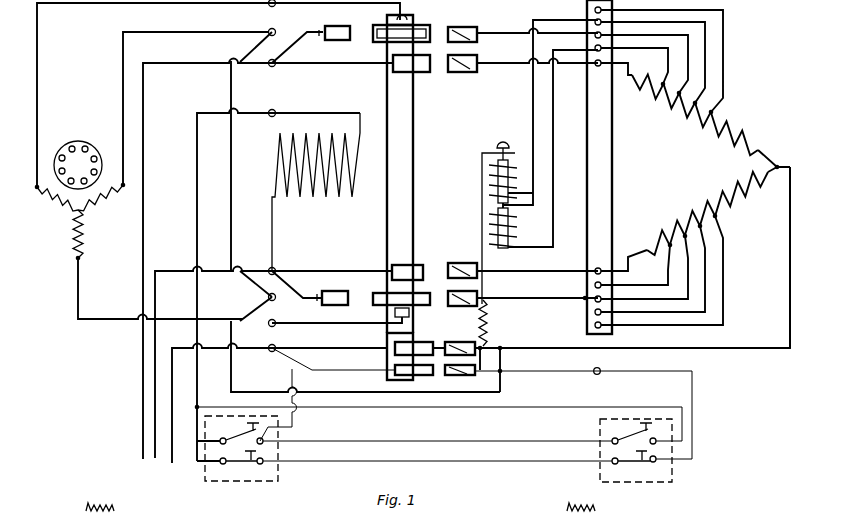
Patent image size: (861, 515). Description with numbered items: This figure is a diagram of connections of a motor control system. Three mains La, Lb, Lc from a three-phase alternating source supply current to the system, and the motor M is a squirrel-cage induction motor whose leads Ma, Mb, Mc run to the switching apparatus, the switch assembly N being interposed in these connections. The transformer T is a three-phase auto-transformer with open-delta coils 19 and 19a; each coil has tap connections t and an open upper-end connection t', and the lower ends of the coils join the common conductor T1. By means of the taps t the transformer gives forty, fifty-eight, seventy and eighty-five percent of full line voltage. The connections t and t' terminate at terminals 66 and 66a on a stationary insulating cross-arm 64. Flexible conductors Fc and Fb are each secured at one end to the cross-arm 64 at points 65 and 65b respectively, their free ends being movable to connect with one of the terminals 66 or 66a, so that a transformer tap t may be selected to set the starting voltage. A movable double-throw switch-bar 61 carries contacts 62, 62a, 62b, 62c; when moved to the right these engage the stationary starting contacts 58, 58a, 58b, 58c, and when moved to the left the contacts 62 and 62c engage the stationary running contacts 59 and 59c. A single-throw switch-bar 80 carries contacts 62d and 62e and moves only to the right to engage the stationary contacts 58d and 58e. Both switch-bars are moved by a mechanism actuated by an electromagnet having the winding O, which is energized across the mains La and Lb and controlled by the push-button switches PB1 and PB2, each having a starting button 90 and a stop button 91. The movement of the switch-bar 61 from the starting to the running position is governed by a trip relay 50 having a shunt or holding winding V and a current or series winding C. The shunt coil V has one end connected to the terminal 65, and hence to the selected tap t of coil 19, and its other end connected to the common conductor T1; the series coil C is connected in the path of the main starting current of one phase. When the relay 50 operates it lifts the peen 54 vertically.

The motor lead Mc is at (62, 92).
The motor armature lead Ma is at (123, 98).
The squirrel-cage induction motor M is at (79, 142).
The motor return lead Mb is at (80, 298).
The reversing switch N is at (198, 170).
The main Lc is at (143, 459).
The main Lb is at (155, 458).
The main La is at (172, 462).
The stationary running contact 59 is at (337, 42).
The stationary running contact 59c is at (334, 290).
The electromagnet winding O is at (331, 198).
The double-throw switch-bar 61 is at (400, 174).
The movable contact 62 is at (430, 32).
The movable contact 62a is at (425, 68).
The movable contact 62b is at (418, 264).
The movable contact 62c is at (425, 292).
The movable contact 62d is at (432, 332).
The movable contact 62e is at (432, 380).
The single-throw switch-bar 80 is at (387, 378).
The stationary starting contact 58 is at (470, 36).
The stationary starting contact 58a is at (468, 67).
The stationary starting contact 58b is at (470, 267).
The stationary starting contact 58c is at (470, 295).
The stationary contact 58d is at (462, 339).
The stationary contact 58e is at (462, 376).
The peen 54 is at (505, 141).
The shunt or holding winding V is at (490, 175).
The trip relay 50 is at (490, 202).
The current or series winding C is at (490, 229).
The stationary insulating cross-arm 64 is at (599, 167).
The flexible conductor anchor point 65 is at (587, 18).
The flexible conductor Fc is at (587, 5).
The flexible conductor anchor point 65b is at (587, 297).
The flexible conductor Fb is at (590, 314).
The terminal 66 is at (650, 48).
The terminal 66a is at (615, 326).
The tap connection t is at (715, 162).
The open or upper-end connection t' is at (632, 159).
The open-delta coil 19 is at (738, 132).
The open-delta coil 19a is at (733, 210).
The transformer T is at (735, 162).
The common conductor T1 is at (791, 262).
The push-button switch PB1 is at (278, 477).
The push-button switch PB2 is at (672, 476).
The starting button 90 is at (438, 432).
The stop button 91 is at (438, 466).